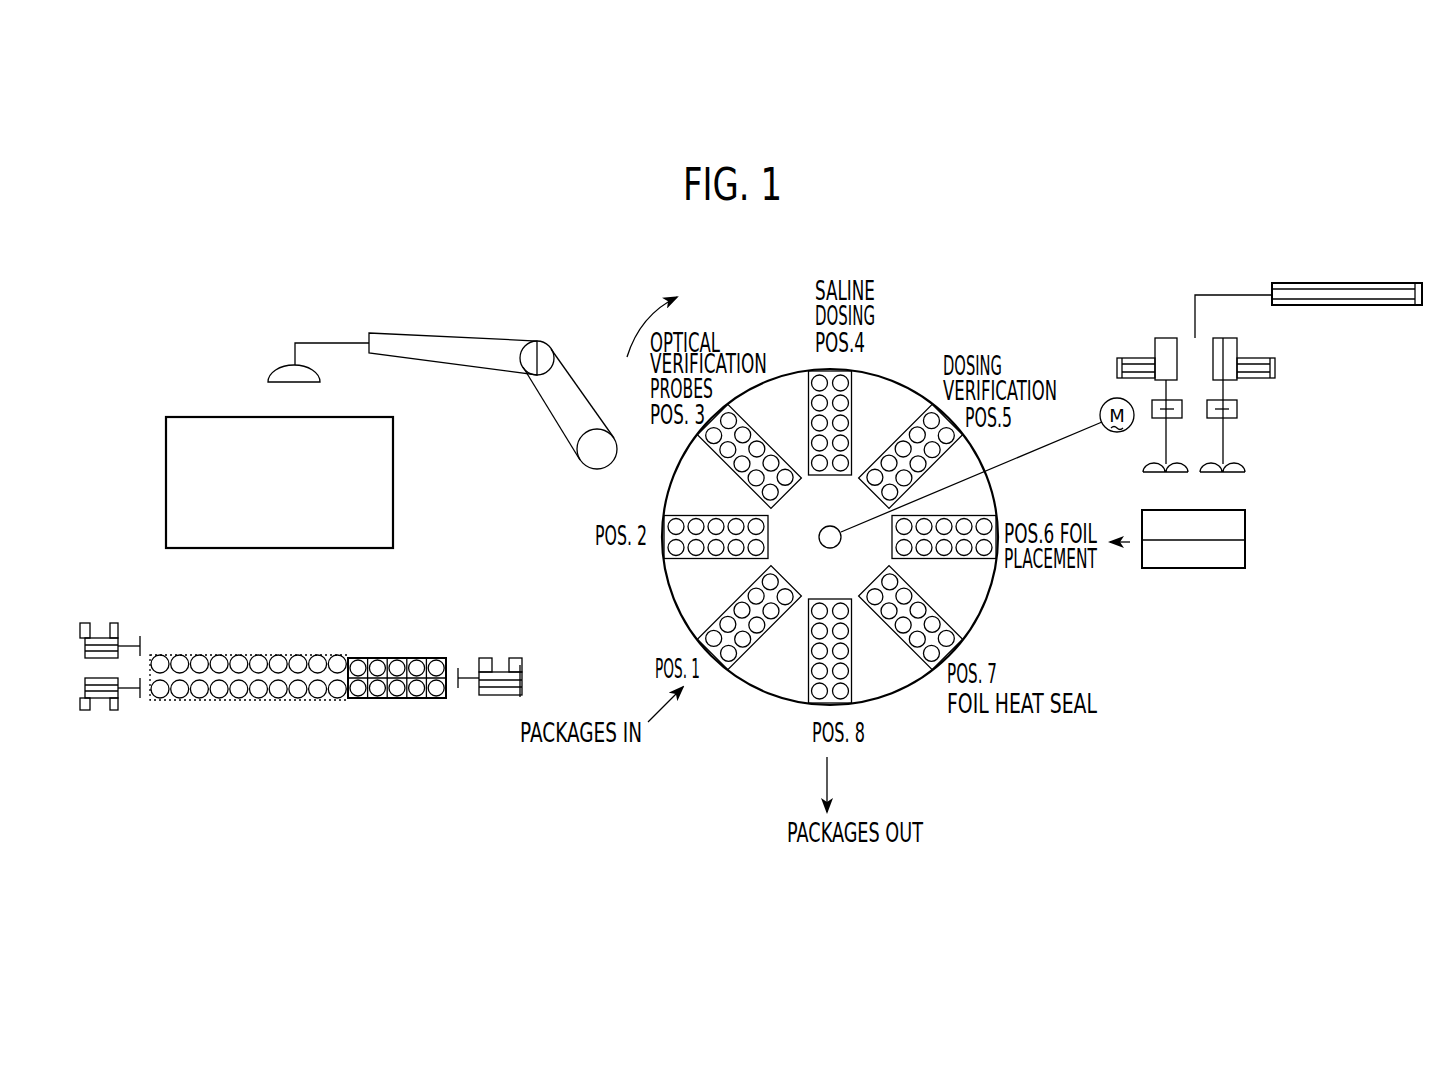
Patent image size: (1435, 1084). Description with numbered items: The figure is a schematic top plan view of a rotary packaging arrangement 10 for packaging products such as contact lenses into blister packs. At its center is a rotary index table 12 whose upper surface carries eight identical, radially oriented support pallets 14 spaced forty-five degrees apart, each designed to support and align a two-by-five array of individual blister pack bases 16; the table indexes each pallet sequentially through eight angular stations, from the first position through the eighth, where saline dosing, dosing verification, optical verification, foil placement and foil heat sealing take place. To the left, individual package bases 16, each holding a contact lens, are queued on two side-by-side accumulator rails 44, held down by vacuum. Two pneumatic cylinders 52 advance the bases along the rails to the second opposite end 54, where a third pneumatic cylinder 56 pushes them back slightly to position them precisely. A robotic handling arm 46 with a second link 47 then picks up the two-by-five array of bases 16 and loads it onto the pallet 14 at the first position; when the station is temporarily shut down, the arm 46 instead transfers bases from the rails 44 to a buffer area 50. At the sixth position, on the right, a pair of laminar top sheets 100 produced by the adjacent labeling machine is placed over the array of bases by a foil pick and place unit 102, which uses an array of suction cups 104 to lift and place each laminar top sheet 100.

The packaging arrangement 10 is at (943, 272).
The rotary index table 12 is at (842, 595).
The support pallets 14 is at (812, 407).
The blister pack bases 16 is at (430, 658).
The accumulator rails 44 is at (333, 647).
The robotic handling arm 46 is at (443, 362).
The robot arm lower link 47 is at (597, 452).
The buffer area 50 is at (217, 422).
The pneumatic cylinders 52 is at (88, 660).
The second opposite end 54 is at (458, 645).
The third pneumatic cylinder 56 is at (523, 678).
The laminar top sheets 100 is at (1222, 532).
The foil pick and place unit 102 is at (1275, 401).
The suction cups 104 is at (1232, 476).